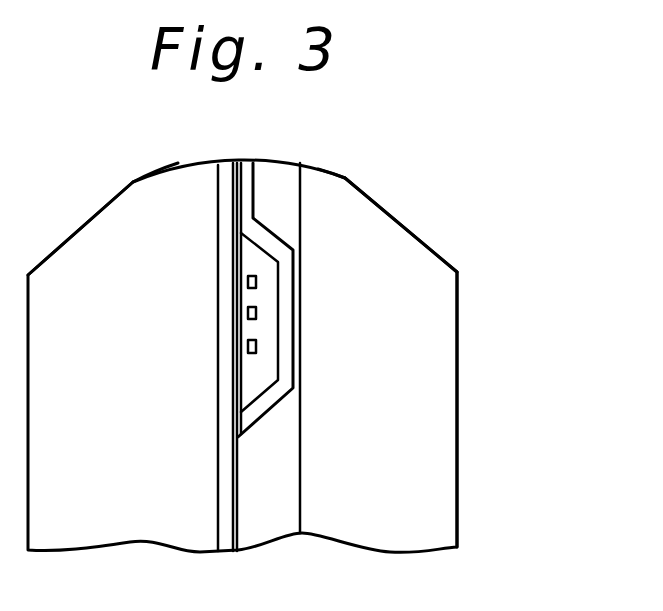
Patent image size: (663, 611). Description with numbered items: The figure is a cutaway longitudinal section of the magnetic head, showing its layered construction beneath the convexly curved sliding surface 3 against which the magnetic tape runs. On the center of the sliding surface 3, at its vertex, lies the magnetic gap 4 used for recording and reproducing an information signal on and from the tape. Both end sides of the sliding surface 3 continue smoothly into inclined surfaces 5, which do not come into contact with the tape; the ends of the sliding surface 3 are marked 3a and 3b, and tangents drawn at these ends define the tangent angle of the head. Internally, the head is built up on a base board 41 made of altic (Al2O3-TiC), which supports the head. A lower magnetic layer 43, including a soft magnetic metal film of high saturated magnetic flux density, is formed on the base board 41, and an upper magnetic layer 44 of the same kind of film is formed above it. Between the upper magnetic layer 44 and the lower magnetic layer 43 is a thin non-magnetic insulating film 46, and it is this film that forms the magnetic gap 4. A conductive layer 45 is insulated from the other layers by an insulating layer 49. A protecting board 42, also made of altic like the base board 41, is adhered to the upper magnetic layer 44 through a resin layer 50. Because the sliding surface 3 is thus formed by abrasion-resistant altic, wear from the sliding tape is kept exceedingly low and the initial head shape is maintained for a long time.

The sliding surface 3 is at (178, 162).
The end of the sliding surface 3a is at (133, 181).
The end of the sliding surface 3b is at (347, 178).
The magnetic gap 4 is at (238, 172).
The inclined surfaces 5 is at (71, 232).
The base board 41 is at (100, 533).
The protecting board 42 is at (418, 540).
The lower magnetic layer 43 is at (230, 540).
The upper magnetic layer 44 is at (250, 170).
The conductive layer 45 is at (256, 282).
The non-magnetic insulating film 46 is at (238, 217).
The insulating layer 49 is at (272, 373).
The resin layer 50 is at (293, 522).